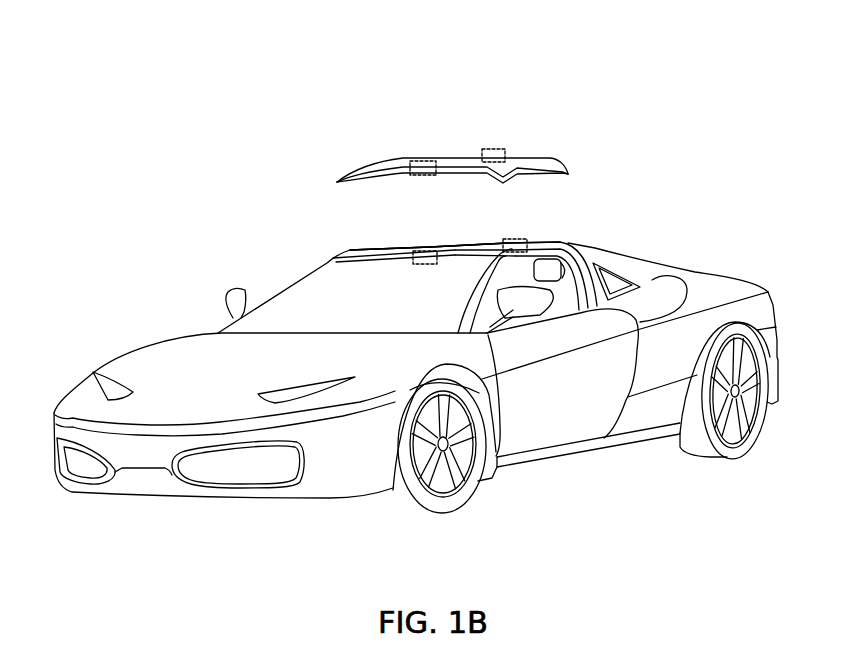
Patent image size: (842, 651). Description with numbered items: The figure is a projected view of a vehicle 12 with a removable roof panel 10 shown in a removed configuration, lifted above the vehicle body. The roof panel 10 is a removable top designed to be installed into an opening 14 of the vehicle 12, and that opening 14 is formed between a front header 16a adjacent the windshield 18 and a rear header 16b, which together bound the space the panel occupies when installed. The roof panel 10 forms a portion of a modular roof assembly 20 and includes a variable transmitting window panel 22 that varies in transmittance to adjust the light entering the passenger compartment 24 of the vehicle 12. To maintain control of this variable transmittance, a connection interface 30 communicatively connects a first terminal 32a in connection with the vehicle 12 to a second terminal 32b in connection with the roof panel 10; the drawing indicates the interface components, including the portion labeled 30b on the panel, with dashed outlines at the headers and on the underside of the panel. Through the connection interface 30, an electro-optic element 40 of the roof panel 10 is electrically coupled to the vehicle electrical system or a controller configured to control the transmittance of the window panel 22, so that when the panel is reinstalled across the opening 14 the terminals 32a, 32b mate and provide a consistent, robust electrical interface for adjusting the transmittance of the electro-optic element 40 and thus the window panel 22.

The roof panel 10 is at (452, 132).
The vehicle 12 is at (163, 256).
The opening 14 is at (486, 238).
The front header 16a is at (383, 246).
The rear header 16b is at (575, 245).
The windshield 18 is at (312, 293).
The modular roof assembly 20 is at (320, 93).
The window panel 22 is at (452, 132).
The passenger compartment 24 is at (592, 290).
The connection interface 30 is at (459, 190).
The panel-side attachment member 30b is at (408, 163).
The first terminal 32a is at (423, 250).
The second terminal 32b is at (503, 149).
The electro-optic element 40 is at (462, 157).